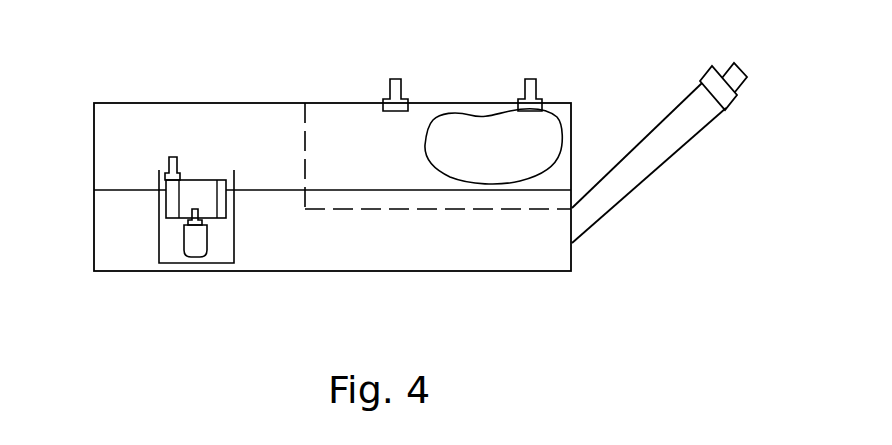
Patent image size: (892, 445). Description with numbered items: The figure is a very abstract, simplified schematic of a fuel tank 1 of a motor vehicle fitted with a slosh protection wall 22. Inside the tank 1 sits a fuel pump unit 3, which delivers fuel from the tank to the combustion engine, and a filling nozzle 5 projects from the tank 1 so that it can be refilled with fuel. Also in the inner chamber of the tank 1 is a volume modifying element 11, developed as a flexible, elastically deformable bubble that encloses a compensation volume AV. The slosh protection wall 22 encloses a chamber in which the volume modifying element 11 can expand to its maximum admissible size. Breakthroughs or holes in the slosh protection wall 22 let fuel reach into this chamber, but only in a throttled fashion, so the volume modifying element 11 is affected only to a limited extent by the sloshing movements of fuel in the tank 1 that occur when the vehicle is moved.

The tank 1 is at (340, 103).
The fuel pump unit 3 is at (198, 195).
The filling nozzle 5 is at (663, 165).
The volume modifying element 11 is at (558, 135).
The slosh protection wall 22 is at (350, 212).
The compensation volume AV is at (545, 125).